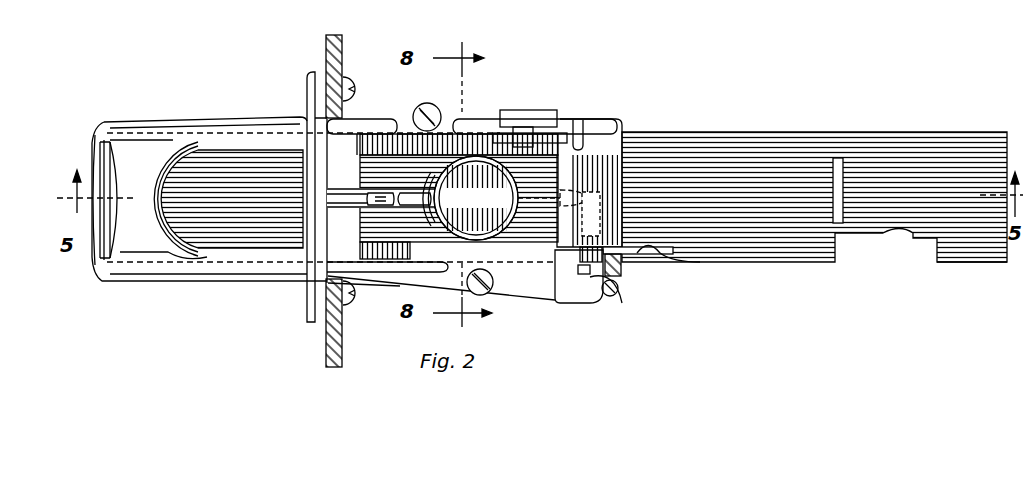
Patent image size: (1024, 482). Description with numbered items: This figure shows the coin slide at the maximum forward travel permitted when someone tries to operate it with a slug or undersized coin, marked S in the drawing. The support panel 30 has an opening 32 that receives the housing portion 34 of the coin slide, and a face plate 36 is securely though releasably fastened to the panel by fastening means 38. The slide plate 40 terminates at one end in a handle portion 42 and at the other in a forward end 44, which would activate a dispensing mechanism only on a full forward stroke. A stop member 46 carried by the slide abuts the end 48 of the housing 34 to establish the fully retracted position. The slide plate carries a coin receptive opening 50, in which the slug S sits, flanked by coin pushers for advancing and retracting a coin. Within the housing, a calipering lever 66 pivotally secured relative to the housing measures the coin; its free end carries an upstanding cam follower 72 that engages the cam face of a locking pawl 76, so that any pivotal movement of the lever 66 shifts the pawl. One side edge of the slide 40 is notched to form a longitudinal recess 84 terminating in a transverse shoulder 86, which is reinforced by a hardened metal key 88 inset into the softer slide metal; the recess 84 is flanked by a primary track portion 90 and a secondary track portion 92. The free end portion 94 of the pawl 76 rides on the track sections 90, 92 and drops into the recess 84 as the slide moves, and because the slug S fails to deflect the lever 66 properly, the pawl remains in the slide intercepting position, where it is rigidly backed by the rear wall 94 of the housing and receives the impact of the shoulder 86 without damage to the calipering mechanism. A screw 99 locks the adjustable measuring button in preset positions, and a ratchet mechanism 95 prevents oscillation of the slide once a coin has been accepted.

The support panel 30 is at (344, 45).
The opening 32 is at (344, 80).
The housing portion 34 is at (362, 124).
The face plate 36 is at (313, 323).
The fastening means 38 is at (347, 304).
The slide plate 40 is at (232, 238).
The handle portion 42 is at (106, 162).
The forward end 44 is at (990, 258).
The stop member 46 is at (840, 158).
The end 48 is at (622, 147).
The coin receptive opening 50 is at (517, 184).
The slug S is at (447, 172).
The calipering lever 66 is at (588, 275).
The cam follower 72 is at (582, 274).
The locking pawl 76 is at (614, 295).
The longitudinal recess 84 is at (663, 250).
The shoulder 86 is at (603, 253).
The hardened metal key 88 is at (598, 214).
The primary track portion 90 is at (790, 263).
The secondary track portion 92 is at (497, 292).
The free end portion 94 is at (618, 267).
The ratchet mechanism 95 is at (538, 114).
The screw 99 is at (452, 105).